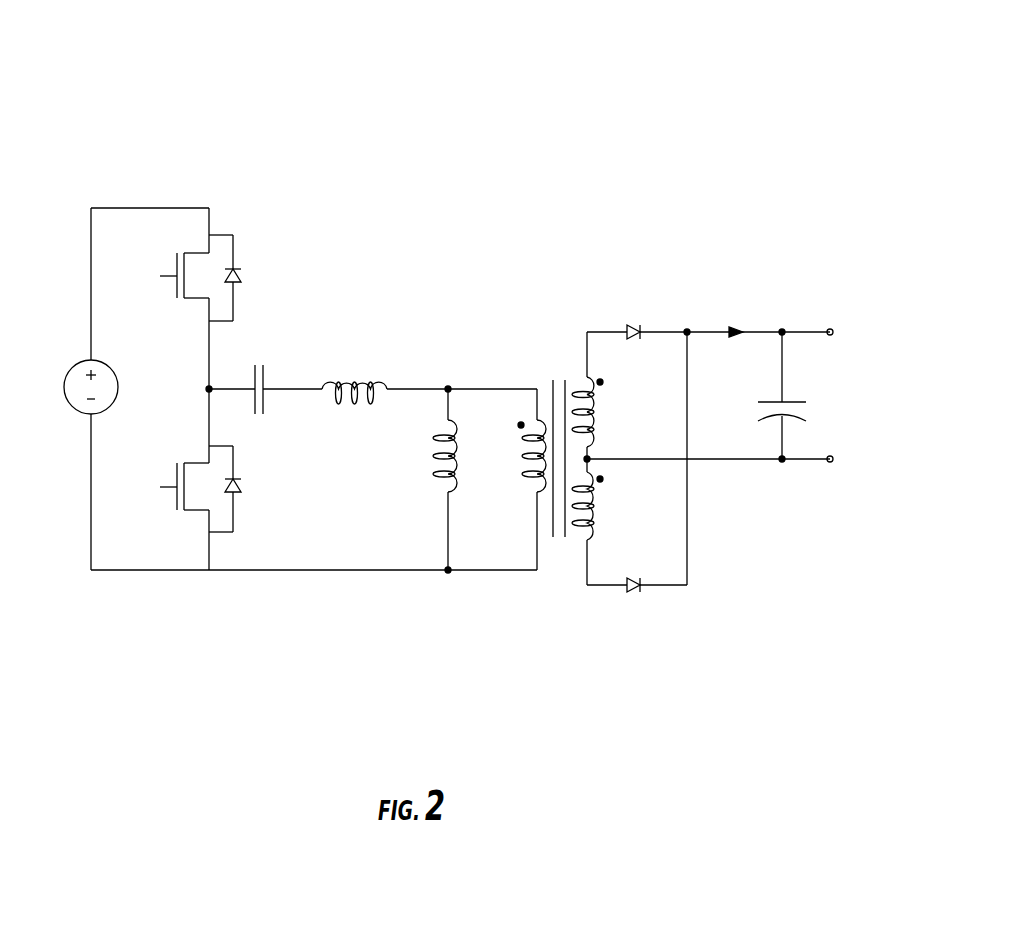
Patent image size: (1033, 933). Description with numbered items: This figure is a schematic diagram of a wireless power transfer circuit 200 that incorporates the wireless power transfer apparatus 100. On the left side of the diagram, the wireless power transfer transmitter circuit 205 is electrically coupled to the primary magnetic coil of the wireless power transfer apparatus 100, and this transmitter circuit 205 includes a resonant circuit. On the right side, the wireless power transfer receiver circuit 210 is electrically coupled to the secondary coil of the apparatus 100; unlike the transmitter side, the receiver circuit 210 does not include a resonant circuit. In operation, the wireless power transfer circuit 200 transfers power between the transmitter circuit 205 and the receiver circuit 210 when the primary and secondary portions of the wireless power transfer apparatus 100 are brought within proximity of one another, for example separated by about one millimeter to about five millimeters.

The wireless power transfer circuit 200 is at (800, 39).
The wireless power transfer transmitter circuit 205 is at (513, 190).
The wireless power transfer receiver circuit 210 is at (815, 670).
The wireless power transfer apparatus 100 is at (552, 300).